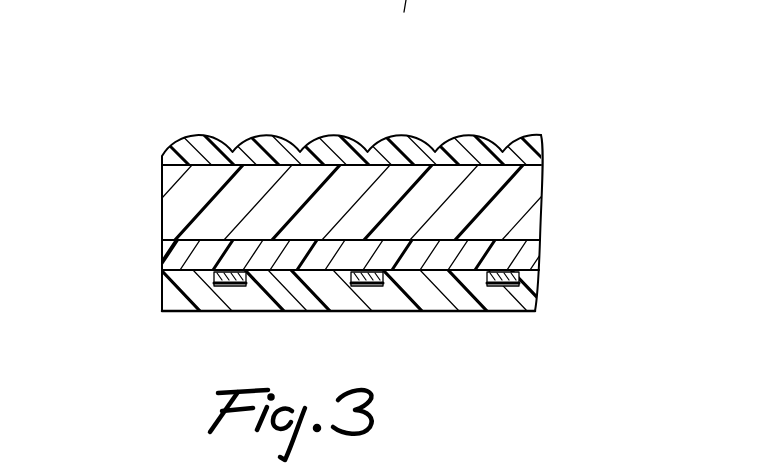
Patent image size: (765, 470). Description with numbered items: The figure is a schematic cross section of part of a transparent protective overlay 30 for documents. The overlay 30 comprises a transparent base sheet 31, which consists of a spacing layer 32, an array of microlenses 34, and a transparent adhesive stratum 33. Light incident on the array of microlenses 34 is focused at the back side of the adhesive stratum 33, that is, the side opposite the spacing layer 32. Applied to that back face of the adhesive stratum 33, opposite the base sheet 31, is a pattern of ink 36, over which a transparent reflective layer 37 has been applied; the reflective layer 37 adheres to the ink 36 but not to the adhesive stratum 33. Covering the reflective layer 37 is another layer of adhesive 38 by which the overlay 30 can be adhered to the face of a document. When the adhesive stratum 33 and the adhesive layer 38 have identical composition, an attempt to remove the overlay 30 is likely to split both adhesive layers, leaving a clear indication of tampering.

The overlay 30 is at (524, 106).
The transparent base sheet 31 is at (125, 133).
The spacing layer 32 is at (523, 200).
The transparent adhesive stratum 33 is at (533, 257).
The array of microlenses 34 is at (210, 146).
The pattern of ink 36 is at (360, 272).
The transparent reflective layer 37 is at (497, 284).
The layer of adhesive 38 is at (183, 290).